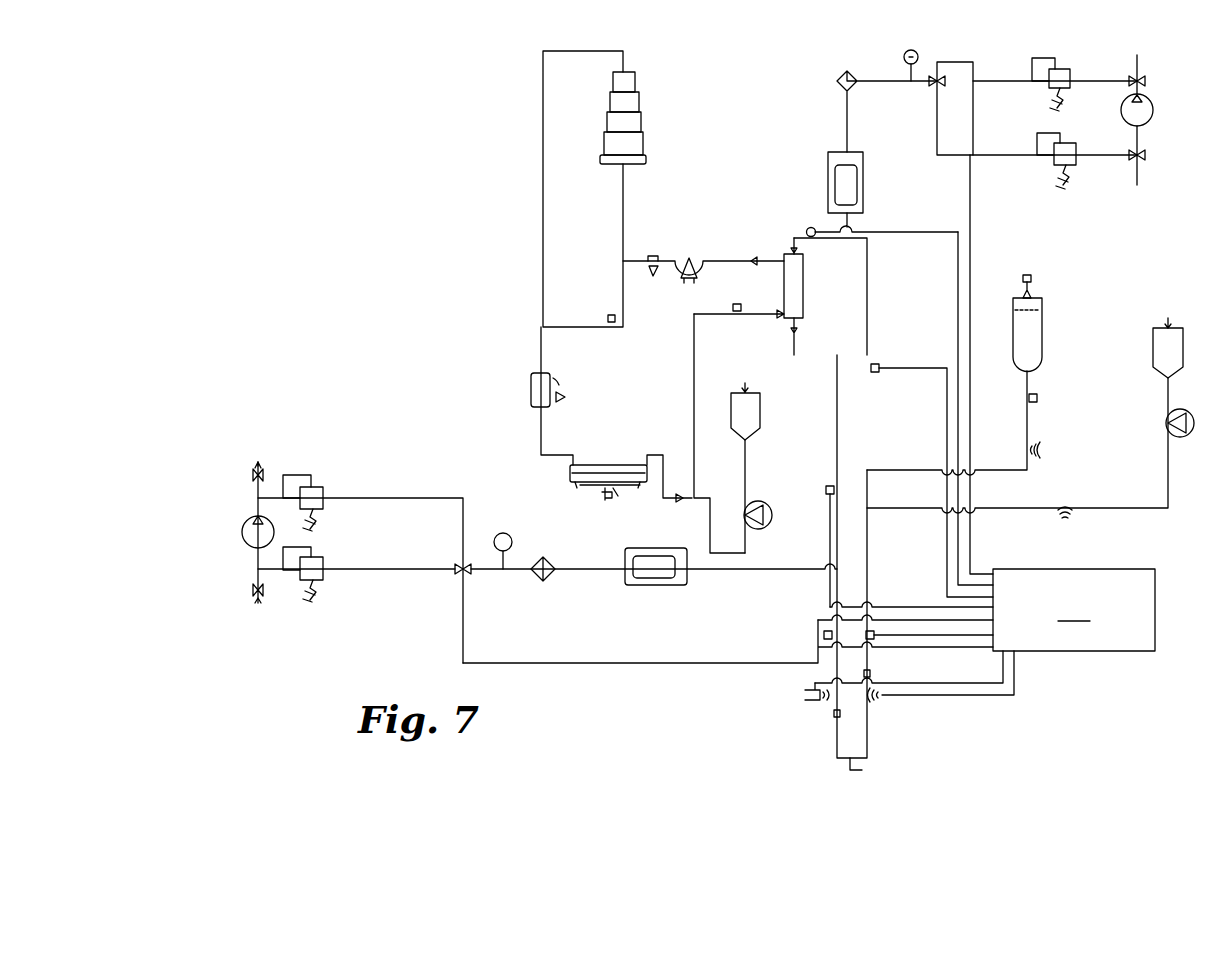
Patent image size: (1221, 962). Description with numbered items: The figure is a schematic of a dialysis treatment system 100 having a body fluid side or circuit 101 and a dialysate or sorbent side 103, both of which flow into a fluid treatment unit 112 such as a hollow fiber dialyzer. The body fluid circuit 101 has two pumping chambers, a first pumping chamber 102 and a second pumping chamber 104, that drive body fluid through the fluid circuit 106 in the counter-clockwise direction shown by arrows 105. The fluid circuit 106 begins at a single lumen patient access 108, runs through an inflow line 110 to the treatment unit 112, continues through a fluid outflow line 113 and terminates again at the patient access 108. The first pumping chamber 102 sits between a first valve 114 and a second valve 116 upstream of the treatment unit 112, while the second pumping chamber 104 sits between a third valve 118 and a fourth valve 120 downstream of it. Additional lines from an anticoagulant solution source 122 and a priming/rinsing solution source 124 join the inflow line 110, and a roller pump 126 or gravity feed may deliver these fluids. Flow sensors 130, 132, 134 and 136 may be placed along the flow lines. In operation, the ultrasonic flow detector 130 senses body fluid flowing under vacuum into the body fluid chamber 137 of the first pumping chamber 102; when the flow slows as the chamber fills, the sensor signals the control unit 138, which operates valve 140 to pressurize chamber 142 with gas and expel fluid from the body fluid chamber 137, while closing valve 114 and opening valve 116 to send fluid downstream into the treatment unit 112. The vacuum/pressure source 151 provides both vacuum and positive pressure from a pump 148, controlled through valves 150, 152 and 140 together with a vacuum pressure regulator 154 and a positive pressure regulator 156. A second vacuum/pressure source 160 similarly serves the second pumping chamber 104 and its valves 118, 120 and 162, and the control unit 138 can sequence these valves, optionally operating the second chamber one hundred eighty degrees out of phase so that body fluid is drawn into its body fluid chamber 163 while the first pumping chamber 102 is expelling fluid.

The dialysis treatment system 100 is at (723, 178).
The body fluid side or circuit 101 is at (907, 285).
The first pumping chamber 102 is at (865, 172).
The dialysate or sorbent side 103 is at (425, 310).
The second pumping chamber 104 is at (653, 585).
The arrows 105 is at (869, 673).
The fluid circuit 106 is at (869, 300).
The single lumen patient access 108 is at (862, 766).
The inflow line 110 is at (867, 578).
The fluid treatment unit 112 is at (803, 310).
The fluid outflow line 113 is at (829, 586).
The first valve 114 is at (880, 372).
The second valve 116 is at (808, 227).
The third valve 118 is at (826, 488).
The fourth valve 120 is at (823, 632).
The anticoagulant solution source 122 is at (1152, 344).
The priming/rinsing solution source 124 is at (1042, 310).
The pump 126 is at (1168, 428).
The ultrasonic flow detector 130 is at (880, 700).
The flow sensor 132 is at (811, 696).
The flow sensor 134 is at (1064, 520).
The flow sensor 136 is at (1038, 447).
The body fluid chamber 137 is at (856, 190).
The control unit 138 is at (1074, 610).
The valve 140 is at (931, 86).
The chamber 142 is at (833, 153).
The pump 148 is at (1150, 119).
The valve 150 is at (1142, 80).
The vacuum/pressure source 151 is at (1020, 204).
The valve 152 is at (1140, 160).
The vacuum pressure regulator 154 is at (1058, 72).
The positive pressure regulator 156 is at (1064, 163).
The second vacuum/pressure source 160 is at (412, 472).
The valve 162 is at (468, 576).
The body fluid chamber 163 is at (661, 559).